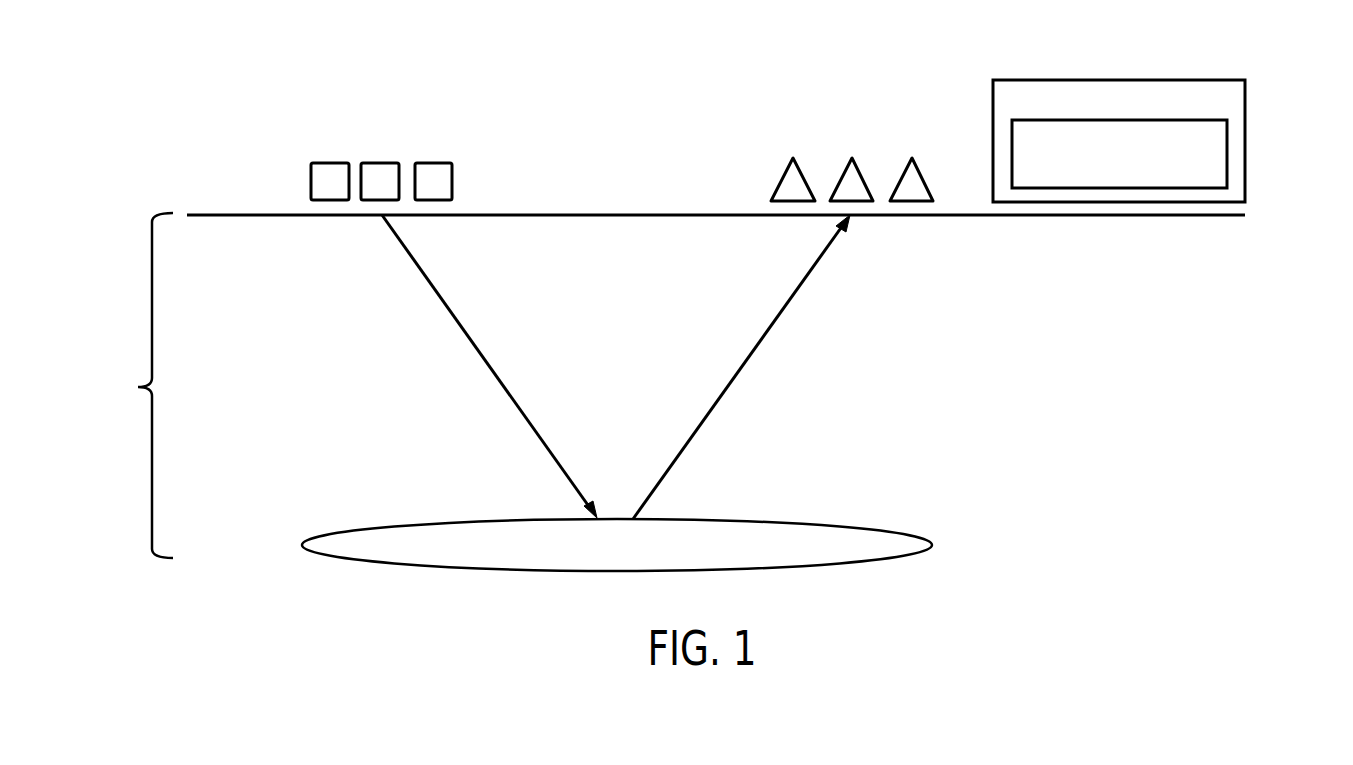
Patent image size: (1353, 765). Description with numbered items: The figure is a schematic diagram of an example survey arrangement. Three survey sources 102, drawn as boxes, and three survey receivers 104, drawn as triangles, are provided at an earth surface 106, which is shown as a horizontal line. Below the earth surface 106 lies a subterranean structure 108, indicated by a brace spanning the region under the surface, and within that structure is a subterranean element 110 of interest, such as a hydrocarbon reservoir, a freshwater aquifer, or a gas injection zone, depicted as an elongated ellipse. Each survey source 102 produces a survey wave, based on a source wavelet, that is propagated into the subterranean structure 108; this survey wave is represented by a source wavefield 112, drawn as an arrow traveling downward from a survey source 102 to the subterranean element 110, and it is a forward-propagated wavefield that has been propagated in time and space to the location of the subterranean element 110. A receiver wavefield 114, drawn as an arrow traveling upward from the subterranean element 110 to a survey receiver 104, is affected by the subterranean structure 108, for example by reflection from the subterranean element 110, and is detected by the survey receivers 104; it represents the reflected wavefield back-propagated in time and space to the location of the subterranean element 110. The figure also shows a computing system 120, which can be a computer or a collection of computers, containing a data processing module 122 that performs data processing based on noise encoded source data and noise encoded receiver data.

The survey source 102 is at (330, 163).
The survey receiver 104 is at (782, 174).
The earth surface 106 is at (253, 214).
The subterranean structure 108 is at (138, 387).
The subterranean element 110 is at (840, 526).
The source wavefield 112 is at (433, 283).
The receiver wavefield 114 is at (745, 362).
The computing system 120 is at (1118, 80).
The data processing module 122 is at (1228, 153).